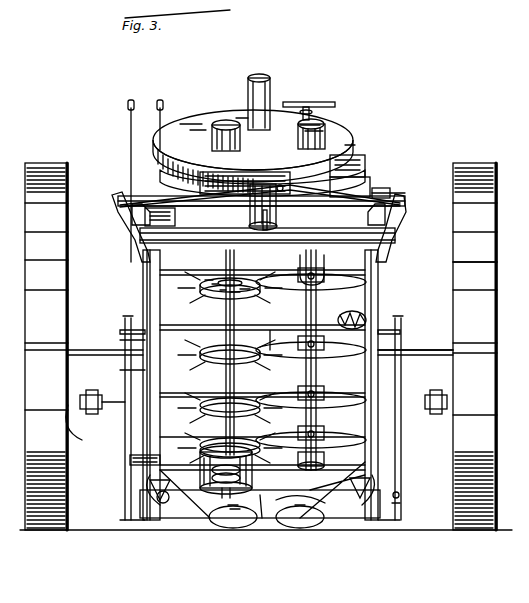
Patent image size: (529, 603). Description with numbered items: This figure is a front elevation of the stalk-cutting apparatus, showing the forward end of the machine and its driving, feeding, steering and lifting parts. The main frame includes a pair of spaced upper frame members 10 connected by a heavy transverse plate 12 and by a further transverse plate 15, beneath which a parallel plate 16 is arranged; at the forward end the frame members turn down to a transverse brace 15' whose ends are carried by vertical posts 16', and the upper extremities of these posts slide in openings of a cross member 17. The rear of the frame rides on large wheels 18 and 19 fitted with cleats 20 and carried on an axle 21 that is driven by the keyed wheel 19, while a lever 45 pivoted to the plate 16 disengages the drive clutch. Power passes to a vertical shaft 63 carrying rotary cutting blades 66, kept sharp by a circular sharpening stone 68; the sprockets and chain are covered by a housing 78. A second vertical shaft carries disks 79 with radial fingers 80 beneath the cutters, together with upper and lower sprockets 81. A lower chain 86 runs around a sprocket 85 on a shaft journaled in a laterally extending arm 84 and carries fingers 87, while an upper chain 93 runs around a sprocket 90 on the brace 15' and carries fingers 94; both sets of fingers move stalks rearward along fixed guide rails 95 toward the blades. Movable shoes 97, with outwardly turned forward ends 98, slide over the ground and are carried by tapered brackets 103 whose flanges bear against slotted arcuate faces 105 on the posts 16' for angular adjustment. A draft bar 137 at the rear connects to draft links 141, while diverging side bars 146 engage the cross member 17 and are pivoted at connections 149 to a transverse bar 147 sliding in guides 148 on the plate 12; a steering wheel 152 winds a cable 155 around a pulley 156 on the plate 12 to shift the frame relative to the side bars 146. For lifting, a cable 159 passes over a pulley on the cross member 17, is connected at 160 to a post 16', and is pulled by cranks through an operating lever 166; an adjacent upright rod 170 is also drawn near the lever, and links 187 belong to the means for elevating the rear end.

The upper frame members 10 is at (140, 183).
The transverse plate 12 is at (140, 195).
The transverse plate 15 is at (296, 142).
The transverse brace 15' is at (357, 272).
The plate 16 is at (129, 385).
The vertical posts 16' is at (399, 385).
The cross member 17 is at (320, 238).
The wheel 18 is at (488, 317).
The wheel 19 is at (62, 255).
The cleats 20 is at (483, 280).
The axle 21 is at (426, 348).
The lever 45 is at (282, 110).
The vertical shaft 63 is at (314, 286).
The rotary cutting blades 66 is at (318, 276).
The sharpening stone 68 is at (365, 318).
The housing 78 is at (325, 130).
The disks 79 is at (238, 345).
The radial fingers 80 is at (232, 300).
The sprockets 81 is at (261, 515).
The laterally extending arm 84 is at (160, 462).
The sprocket 85 is at (222, 488).
The chain 86 is at (205, 455).
The fingers 87 is at (170, 503).
The sprocket 90 is at (272, 192).
The chain 93 is at (200, 275).
The fingers 94 is at (210, 218).
The guide rails 95 is at (300, 280).
The movable shoes 97 is at (238, 530).
The outwardly turned forward ends 98 is at (310, 522).
The tapered bracket 103 is at (165, 482).
The arcuate face 105 is at (158, 520).
The draft bar 137 is at (118, 408).
The draft links 141 is at (125, 440).
The side bars 146 is at (118, 215).
The transverse bar 147 is at (380, 188).
The guides 148 is at (368, 177).
The pivotal connections 149 is at (392, 191).
The steering wheel 152 is at (345, 95).
The cable 155 is at (318, 196).
The pulley 156 is at (266, 220).
The cable 159 is at (122, 293).
The cable connection 160 is at (400, 497).
The operating lever 166 is at (128, 103).
The rod 170 is at (161, 102).
The links 187 is at (128, 376).